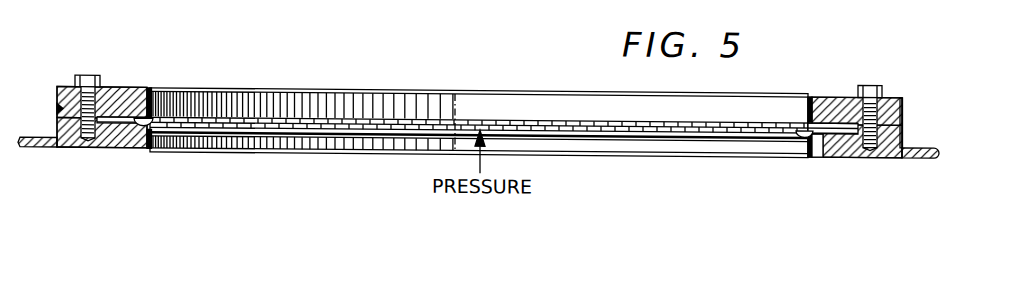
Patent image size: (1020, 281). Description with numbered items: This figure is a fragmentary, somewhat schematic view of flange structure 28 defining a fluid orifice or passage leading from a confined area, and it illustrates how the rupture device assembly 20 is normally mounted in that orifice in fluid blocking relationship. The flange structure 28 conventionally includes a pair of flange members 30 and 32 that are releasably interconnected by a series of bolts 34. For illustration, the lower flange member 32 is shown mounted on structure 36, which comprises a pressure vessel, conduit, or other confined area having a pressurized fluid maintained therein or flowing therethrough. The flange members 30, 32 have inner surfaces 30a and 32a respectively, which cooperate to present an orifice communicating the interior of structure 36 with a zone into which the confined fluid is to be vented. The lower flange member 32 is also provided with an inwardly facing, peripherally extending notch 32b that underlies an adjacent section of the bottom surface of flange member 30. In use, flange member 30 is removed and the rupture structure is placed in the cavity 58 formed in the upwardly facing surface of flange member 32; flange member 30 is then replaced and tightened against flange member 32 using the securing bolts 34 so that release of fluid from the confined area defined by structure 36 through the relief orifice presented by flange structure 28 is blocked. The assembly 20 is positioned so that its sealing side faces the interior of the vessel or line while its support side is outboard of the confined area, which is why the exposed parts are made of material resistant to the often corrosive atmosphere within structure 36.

The rupture device assembly 20 is at (507, 115).
The flange structure 28 is at (903, 90).
The flange member 30 is at (832, 90).
The inner surface 30a is at (157, 86).
The flange member 32 is at (843, 140).
The inner surface 32a is at (156, 149).
The notch 32b is at (820, 147).
The bolts 34 is at (80, 74).
The structure 36 is at (916, 140).
The cavity 58 is at (116, 132).